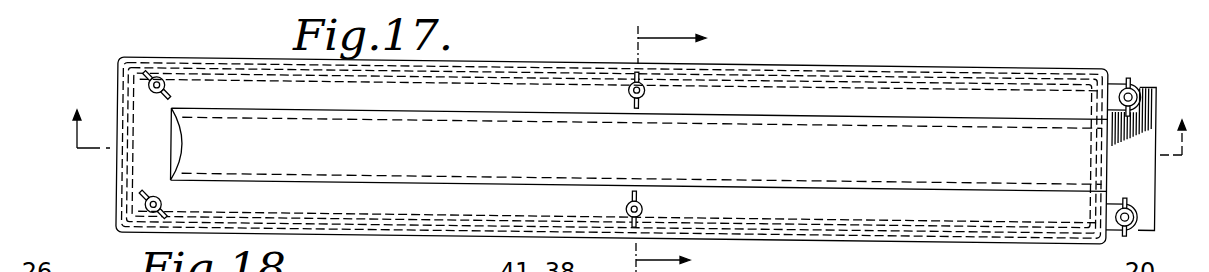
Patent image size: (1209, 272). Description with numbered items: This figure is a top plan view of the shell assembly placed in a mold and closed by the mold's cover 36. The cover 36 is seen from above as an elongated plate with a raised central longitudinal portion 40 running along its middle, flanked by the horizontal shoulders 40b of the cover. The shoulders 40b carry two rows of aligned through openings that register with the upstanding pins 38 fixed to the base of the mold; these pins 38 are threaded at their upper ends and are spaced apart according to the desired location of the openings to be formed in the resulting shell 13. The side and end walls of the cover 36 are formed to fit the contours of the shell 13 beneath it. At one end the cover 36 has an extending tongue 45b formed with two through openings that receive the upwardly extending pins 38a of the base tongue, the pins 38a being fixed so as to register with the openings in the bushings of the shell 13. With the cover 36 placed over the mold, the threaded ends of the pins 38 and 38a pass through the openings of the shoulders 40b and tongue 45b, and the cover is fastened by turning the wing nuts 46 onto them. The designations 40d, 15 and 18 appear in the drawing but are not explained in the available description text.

The shell 13 is at (1135, 181).
The section line 15 is at (630, 121).
The section line 18 is at (686, 149).
The cover 36 is at (911, 100).
The upstanding pins 38 is at (158, 76).
The upwardly extending pins 38a is at (1138, 100).
The raised central longitudinal portion 40 is at (972, 147).
The horizontal shoulder 40b is at (1023, 227).
The side edge of sheet 40d is at (140, 136).
The extending tongue 45b is at (1140, 87).
The wing nuts 46 is at (166, 79).